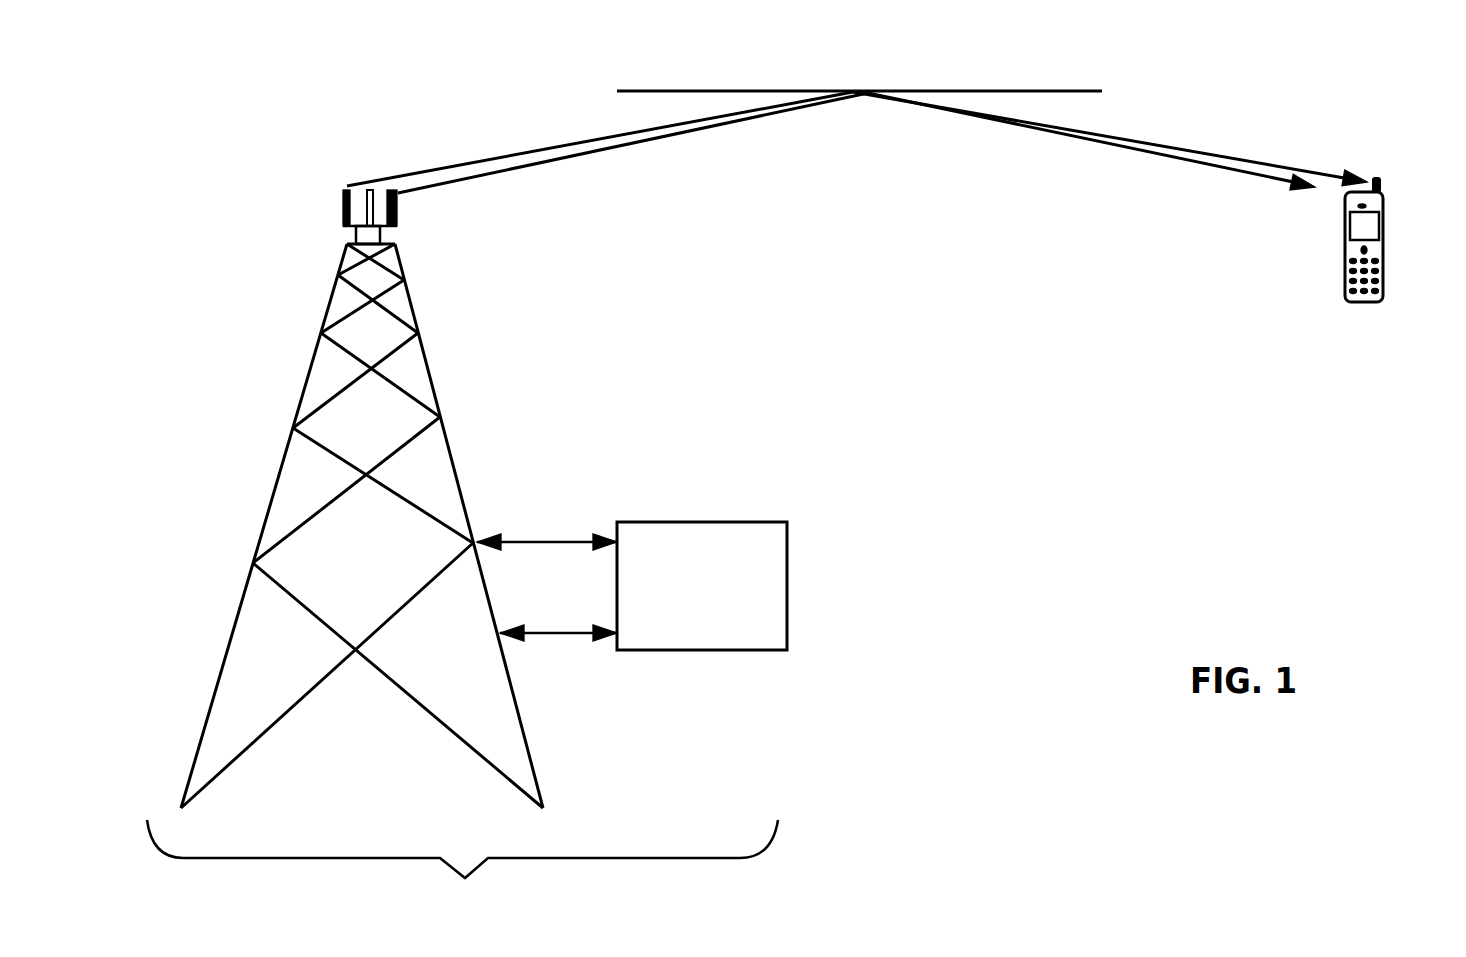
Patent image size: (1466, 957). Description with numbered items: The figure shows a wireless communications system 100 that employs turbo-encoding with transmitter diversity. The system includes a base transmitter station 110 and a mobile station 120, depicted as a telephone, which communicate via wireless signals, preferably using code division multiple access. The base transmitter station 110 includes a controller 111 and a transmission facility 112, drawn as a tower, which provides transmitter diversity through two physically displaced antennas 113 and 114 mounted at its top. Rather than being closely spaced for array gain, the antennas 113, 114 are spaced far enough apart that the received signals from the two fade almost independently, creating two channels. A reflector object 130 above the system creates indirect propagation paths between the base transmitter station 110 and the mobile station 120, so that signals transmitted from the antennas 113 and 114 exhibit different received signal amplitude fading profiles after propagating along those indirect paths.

The wireless communications system 100 is at (874, 350).
The base transmitter station 110 is at (467, 534).
The controller 111 is at (718, 522).
The transmission facility 112 is at (433, 387).
The antenna 113 is at (397, 207).
The antenna 114 is at (342, 207).
The mobile station 120 is at (1385, 248).
The reflector object 130 is at (1013, 90).